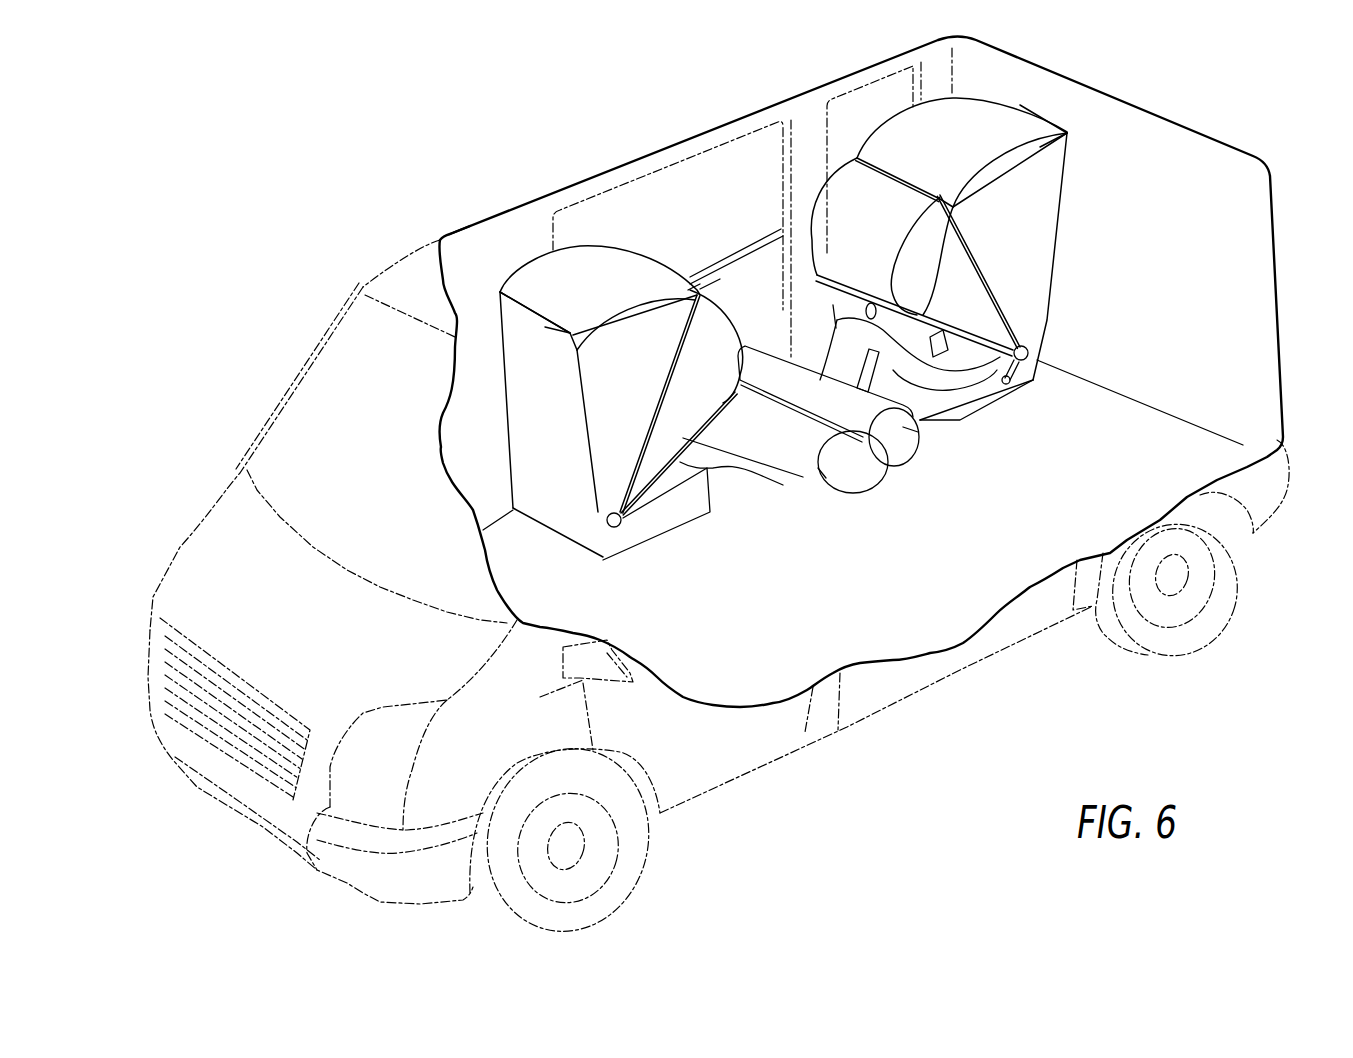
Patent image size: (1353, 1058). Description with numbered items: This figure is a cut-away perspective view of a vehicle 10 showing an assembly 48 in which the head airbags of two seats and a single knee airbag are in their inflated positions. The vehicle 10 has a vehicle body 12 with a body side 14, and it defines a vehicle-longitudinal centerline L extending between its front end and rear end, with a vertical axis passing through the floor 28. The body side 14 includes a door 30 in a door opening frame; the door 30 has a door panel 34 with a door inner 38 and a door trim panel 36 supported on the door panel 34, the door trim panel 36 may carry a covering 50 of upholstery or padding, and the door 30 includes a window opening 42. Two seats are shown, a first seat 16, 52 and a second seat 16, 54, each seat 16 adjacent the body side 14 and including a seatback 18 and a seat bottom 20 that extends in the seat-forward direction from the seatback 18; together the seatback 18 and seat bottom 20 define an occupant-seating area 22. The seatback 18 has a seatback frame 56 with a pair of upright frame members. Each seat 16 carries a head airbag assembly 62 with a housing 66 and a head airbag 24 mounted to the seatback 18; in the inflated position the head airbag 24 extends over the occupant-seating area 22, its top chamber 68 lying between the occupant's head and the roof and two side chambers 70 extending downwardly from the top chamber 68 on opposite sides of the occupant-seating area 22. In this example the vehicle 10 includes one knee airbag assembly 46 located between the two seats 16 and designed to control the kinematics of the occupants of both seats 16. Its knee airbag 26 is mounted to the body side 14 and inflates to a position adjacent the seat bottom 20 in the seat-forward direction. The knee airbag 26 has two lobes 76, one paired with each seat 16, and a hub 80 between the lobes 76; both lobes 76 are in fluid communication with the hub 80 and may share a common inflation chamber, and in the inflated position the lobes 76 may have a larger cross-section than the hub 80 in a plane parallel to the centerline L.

The vehicle 10 is at (323, 323).
The vehicle body 12 is at (290, 383).
The body side 14 is at (473, 202).
The seat 16 is at (761, 345).
The seatback 18 is at (517, 327).
The seat bottom 20 is at (640, 530).
The occupant-seating area 22 is at (700, 450).
The head airbag 24 is at (533, 287).
The knee airbag 26 is at (907, 460).
The floor 28 is at (811, 571).
The door 30 is at (793, 153).
The door panel 34 is at (740, 280).
The door trim panel 36 is at (723, 287).
The door inner 38 is at (703, 283).
The window opening 42 is at (677, 187).
The knee airbag assembly 46 is at (853, 495).
The assembly 48 is at (378, 210).
The covering 50 is at (770, 287).
The first seat 52 is at (520, 427).
The second seat 54 is at (1053, 250).
The seatback frame 56 is at (606, 517).
The head airbag assembly 62 is at (545, 333).
The housing 66 is at (542, 328).
The top chamber 68 is at (590, 270).
The side chambers 70 is at (612, 437).
The lobes 76 is at (917, 428).
The hub 80 is at (878, 455).
The vehicle-longitudinal centerline L is at (1127, 473).